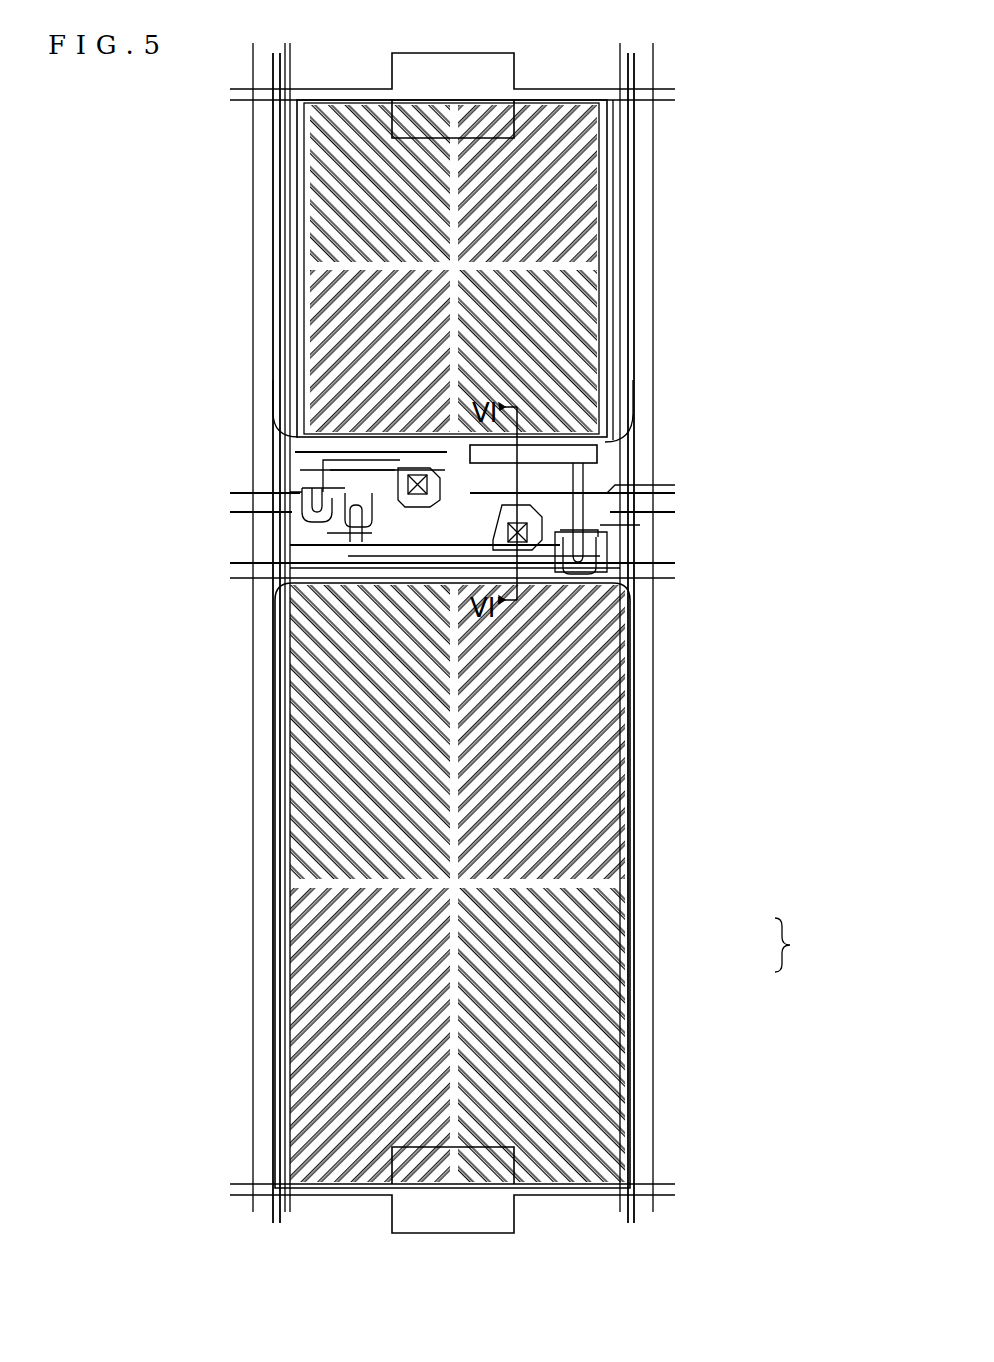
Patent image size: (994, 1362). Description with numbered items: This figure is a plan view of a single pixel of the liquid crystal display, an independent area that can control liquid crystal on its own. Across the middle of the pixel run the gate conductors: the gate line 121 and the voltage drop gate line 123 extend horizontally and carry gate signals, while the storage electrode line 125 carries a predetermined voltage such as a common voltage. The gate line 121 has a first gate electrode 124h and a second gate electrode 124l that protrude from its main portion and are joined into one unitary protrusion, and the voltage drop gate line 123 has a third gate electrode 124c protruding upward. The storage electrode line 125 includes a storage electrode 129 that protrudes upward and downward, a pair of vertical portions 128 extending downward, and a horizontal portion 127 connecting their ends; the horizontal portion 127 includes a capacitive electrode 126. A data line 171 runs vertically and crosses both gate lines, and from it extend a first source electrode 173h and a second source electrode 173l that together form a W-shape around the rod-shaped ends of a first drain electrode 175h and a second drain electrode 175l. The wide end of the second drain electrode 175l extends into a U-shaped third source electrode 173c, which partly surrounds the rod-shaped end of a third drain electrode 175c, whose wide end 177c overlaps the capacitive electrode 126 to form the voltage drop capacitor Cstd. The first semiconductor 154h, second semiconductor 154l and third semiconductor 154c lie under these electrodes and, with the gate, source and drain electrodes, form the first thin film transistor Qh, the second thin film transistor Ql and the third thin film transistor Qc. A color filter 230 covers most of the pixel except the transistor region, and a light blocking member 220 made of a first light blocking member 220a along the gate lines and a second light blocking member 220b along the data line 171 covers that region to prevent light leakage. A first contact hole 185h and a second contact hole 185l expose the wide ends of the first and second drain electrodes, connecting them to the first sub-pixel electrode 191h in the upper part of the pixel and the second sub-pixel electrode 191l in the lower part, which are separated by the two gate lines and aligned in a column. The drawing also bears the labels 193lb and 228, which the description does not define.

The storage electrode line 125 is at (560, 100).
The storage electrode 129 is at (515, 118).
The second light blocking member 220b is at (623, 160).
The color filter 230 is at (262, 190).
The vertical portions 128 is at (608, 208).
The first sub-pixel electrode 191h is at (560, 243).
The shielding electrode 193lb is at (632, 294).
The first light blocking member 220a is at (420, 452).
The light blocking member 220 is at (803, 945).
The second thin film transistor Ql is at (362, 466).
The second gate electrode 124l is at (375, 478).
The second source electrode 173l is at (392, 450).
The horizontal portion 127 is at (235, 438).
The first drain electrode 175h is at (305, 488).
The first thin film transistor Qh is at (298, 481).
The first semiconductor 154h is at (315, 520).
The first source electrode 173h is at (345, 530).
The first gate electrode 124h is at (330, 546).
The second drain electrode 175l is at (355, 550).
The second semiconductor 154l is at (415, 503).
The first contact hole 185h is at (418, 556).
The voltage drop capacitor Cstd is at (560, 438).
The wide end of the third drain electrode 177c is at (615, 440).
The capacitive electrode 126 is at (600, 488).
The gate line 121 is at (660, 490).
The third drain electrode 175c is at (600, 525).
The third gate electrode 124c is at (612, 540).
The storage line portion 228 is at (640, 560).
The voltage drop gate line 123 is at (650, 574).
The third thin film transistor Qc is at (585, 586).
The third source electrode 173c is at (598, 576).
The second contact hole 185l is at (525, 560).
The third semiconductor 154c is at (600, 590).
The second sub-pixel electrode 191l is at (305, 798).
The data line 171 is at (288, 925).